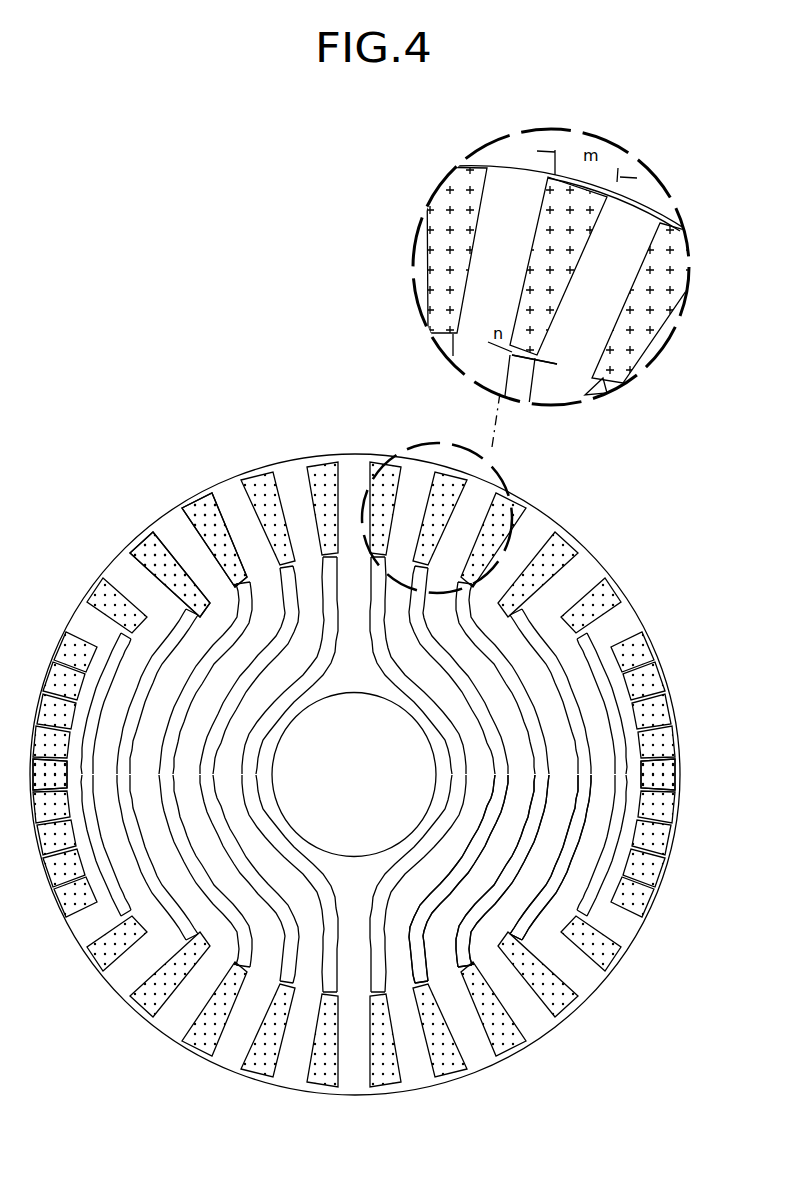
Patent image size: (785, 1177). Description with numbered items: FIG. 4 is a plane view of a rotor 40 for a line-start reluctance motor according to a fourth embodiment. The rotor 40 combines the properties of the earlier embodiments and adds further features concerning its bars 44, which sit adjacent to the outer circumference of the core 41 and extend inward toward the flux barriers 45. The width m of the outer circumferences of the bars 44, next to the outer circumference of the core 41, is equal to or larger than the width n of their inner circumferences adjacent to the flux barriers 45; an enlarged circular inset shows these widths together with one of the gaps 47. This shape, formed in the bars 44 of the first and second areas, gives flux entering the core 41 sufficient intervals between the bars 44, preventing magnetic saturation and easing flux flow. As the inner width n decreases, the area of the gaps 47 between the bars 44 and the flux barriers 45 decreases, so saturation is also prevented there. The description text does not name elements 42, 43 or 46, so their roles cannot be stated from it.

The rotor 40 is at (357, 432).
The core 41 is at (293, 458).
The shaft hole 42 is at (349, 858).
The magnet insertion slot 43 is at (237, 499).
The bars 44 is at (200, 538).
The flux barriers 45 is at (532, 930).
The rib 46 is at (438, 948).
The gaps 47 is at (530, 357).